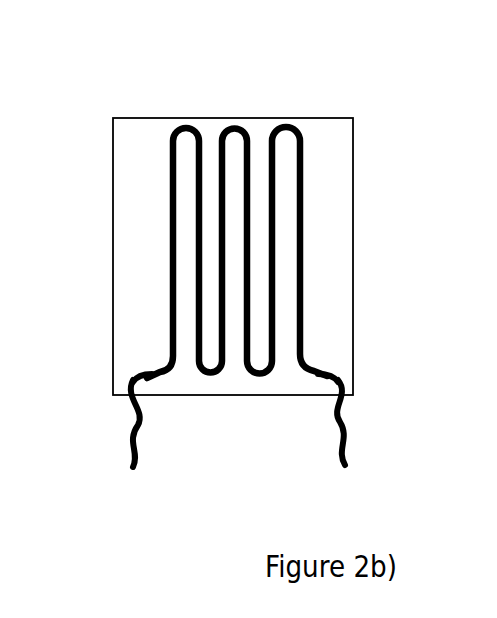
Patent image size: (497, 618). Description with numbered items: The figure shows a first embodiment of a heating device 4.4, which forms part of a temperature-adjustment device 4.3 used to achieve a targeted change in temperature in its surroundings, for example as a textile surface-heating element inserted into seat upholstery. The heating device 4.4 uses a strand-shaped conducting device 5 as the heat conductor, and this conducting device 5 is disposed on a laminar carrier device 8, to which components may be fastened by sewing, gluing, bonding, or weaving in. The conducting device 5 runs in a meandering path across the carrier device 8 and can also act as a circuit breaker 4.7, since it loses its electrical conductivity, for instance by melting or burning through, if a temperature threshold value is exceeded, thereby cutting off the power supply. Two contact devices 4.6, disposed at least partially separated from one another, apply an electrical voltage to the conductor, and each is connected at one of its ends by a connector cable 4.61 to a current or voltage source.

The temperature-adjustment device 4.3 is at (158, 104).
The heating device 4.4 is at (158, 104).
The conducting device 5 is at (293, 128).
The carrier device 8 is at (335, 194).
The circuit breaker 4.7 is at (305, 288).
The contact device 4.6 is at (320, 382).
The connector cable 4.61 is at (133, 424).